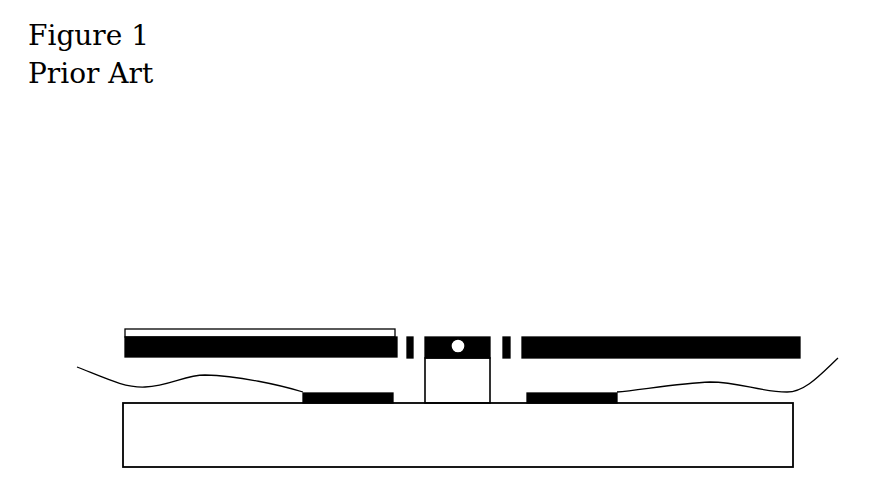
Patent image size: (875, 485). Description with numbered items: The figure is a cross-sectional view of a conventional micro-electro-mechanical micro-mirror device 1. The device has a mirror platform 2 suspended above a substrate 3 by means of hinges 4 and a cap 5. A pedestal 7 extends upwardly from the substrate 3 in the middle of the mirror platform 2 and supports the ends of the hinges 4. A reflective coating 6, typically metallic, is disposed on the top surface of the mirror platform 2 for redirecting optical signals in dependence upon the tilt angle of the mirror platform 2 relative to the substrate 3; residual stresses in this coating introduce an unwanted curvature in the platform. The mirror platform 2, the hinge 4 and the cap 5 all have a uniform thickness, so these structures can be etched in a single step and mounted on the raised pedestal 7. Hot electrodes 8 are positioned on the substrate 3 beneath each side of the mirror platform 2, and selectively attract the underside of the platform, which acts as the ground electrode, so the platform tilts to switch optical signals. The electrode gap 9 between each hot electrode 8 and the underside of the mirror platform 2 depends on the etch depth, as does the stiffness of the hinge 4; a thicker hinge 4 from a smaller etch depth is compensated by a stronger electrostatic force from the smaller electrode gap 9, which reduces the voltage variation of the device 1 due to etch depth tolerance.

The micro-mirror device 1 is at (485, 208).
The mirror platform 2 is at (664, 338).
The substrate 3 is at (739, 447).
The hinge 4 is at (455, 338).
The cap 5 is at (473, 337).
The reflective coating 6 is at (235, 328).
The pedestal 7 is at (475, 394).
The hot electrode 8 is at (449, 359).
The electrode gap 9 is at (460, 382).